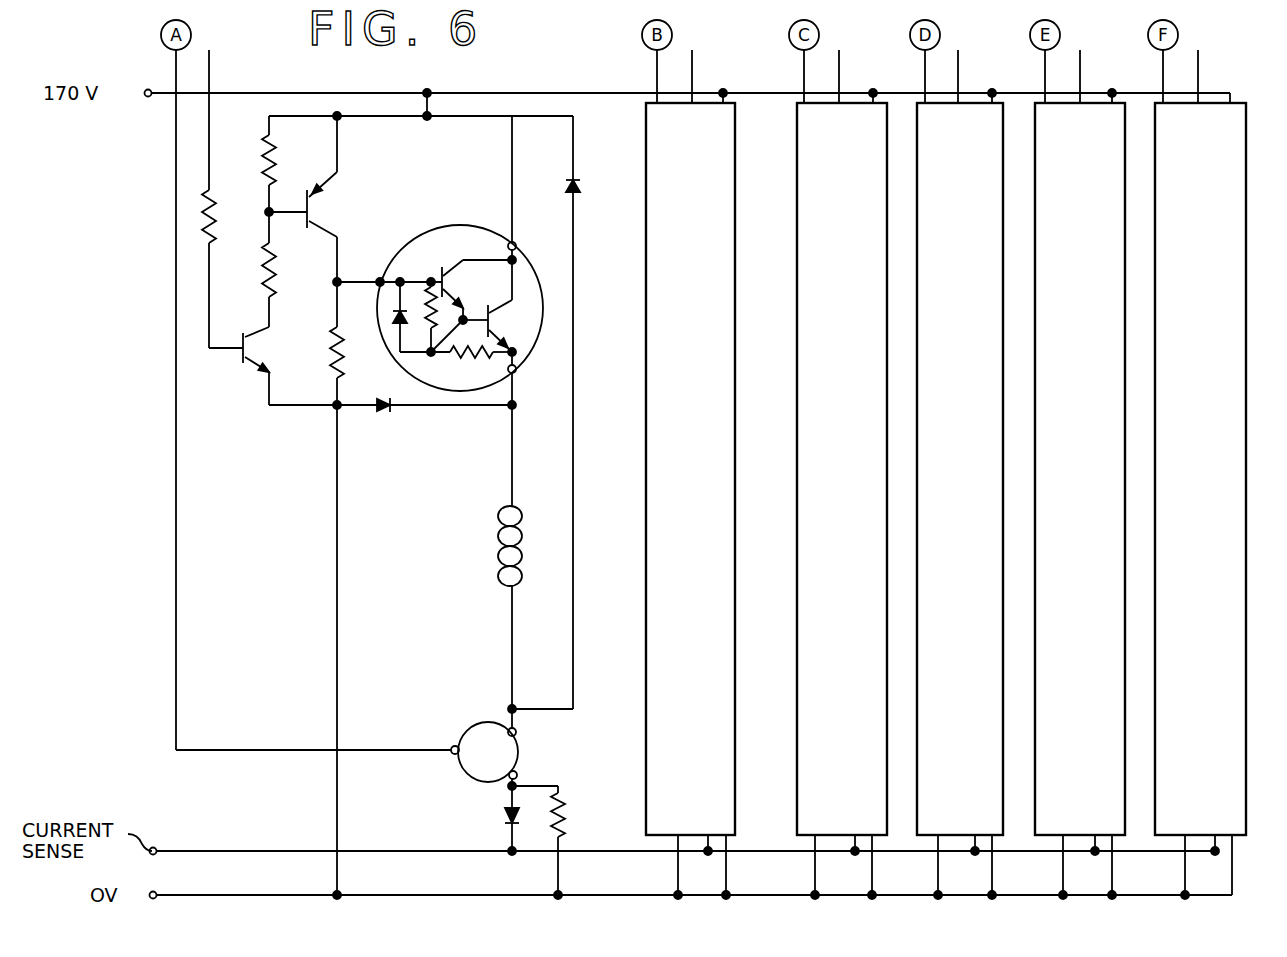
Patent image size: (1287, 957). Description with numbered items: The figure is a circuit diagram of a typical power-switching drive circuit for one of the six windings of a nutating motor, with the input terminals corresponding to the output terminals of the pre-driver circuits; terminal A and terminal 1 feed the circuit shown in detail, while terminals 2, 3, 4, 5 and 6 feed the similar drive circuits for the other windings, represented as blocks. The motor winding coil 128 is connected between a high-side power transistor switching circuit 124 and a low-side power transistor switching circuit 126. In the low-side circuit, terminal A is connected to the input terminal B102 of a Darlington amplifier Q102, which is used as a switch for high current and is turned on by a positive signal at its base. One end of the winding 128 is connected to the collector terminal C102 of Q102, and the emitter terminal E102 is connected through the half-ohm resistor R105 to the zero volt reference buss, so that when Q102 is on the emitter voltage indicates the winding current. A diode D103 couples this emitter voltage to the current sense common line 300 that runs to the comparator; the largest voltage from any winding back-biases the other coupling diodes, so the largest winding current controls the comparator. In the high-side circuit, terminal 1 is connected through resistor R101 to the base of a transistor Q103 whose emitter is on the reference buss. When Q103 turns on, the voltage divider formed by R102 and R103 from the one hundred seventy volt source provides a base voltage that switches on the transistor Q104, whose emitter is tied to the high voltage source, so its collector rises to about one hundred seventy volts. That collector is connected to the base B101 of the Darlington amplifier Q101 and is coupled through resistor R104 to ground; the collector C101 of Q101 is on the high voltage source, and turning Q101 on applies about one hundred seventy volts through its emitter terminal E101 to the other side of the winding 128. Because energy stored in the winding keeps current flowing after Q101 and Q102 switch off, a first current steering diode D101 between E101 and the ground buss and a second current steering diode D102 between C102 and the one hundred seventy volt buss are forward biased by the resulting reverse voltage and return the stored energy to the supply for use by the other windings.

The input terminal 1 is at (209, 105).
The input terminal 2 is at (692, 61).
The input terminal 3 is at (839, 61).
The input terminal 4 is at (958, 61).
The input terminal 5 is at (1080, 61).
The input terminal 6 is at (1198, 61).
The power transistor switching circuit 124 is at (440, 167).
The power transistor switching circuit 126 is at (405, 797).
The motor winding coil 128 is at (498, 554).
The current sense common line 300 is at (316, 851).
The resistor R101 is at (236, 269).
The resistor R102 is at (297, 164).
The resistor R103 is at (297, 269).
The resistor R104 is at (311, 588).
The resistor R105 is at (565, 811).
The Darlington amplifier Q101 is at (440, 227).
The Darlington amplifier Q102 is at (500, 748).
The transistor Q103 is at (294, 366).
The switching transistor Q104 is at (330, 230).
The first current steering diode D101 is at (384, 412).
The second current steering diode D102 is at (580, 182).
The diode D103 is at (505, 816).
The base terminal B101 is at (378, 280).
The collector terminal C101 is at (516, 247).
The emitter terminal E101 is at (516, 370).
The input terminal B102 is at (452, 748).
The collector terminal C102 is at (516, 730).
The emitter terminal E102 is at (517, 774).